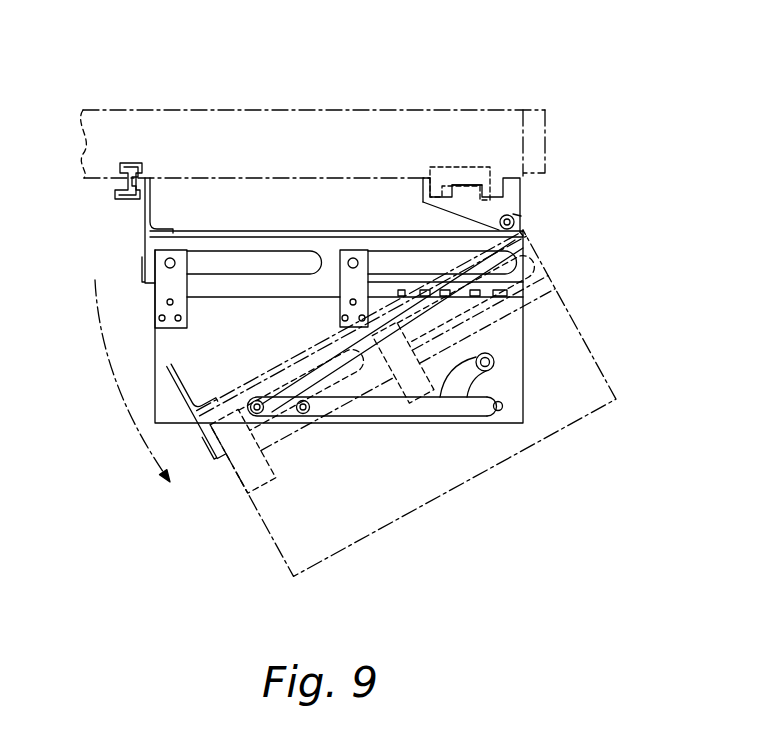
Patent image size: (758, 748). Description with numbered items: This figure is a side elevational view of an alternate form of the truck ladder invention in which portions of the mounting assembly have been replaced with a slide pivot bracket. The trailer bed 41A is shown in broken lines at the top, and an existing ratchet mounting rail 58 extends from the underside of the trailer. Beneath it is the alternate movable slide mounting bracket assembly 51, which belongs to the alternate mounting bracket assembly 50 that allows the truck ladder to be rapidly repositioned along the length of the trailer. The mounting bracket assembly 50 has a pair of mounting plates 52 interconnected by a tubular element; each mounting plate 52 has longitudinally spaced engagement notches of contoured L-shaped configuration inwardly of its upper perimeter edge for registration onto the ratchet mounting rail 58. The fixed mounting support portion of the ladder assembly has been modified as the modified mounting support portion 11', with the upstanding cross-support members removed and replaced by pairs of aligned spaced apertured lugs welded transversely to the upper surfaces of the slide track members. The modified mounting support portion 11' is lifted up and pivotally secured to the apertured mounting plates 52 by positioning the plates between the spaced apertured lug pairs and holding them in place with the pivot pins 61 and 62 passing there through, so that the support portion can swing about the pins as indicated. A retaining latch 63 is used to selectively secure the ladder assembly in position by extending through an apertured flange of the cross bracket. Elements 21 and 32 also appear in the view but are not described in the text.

The trailer bed 41A is at (455, 101).
The ratchet mounting rail 58 is at (435, 178).
The mounting plate 52 is at (522, 203).
The movable slide mounting bracket assembly 51 is at (530, 195).
The mounting bracket assembly 50 is at (575, 226).
The pivot pin 62 is at (521, 216).
The pivot pin 61 is at (523, 233).
The retaining latch 63 is at (125, 198).
The carriage frame 21 is at (178, 348).
The mounting block 32 is at (148, 304).
The modified mounting support portion 11' is at (383, 318).